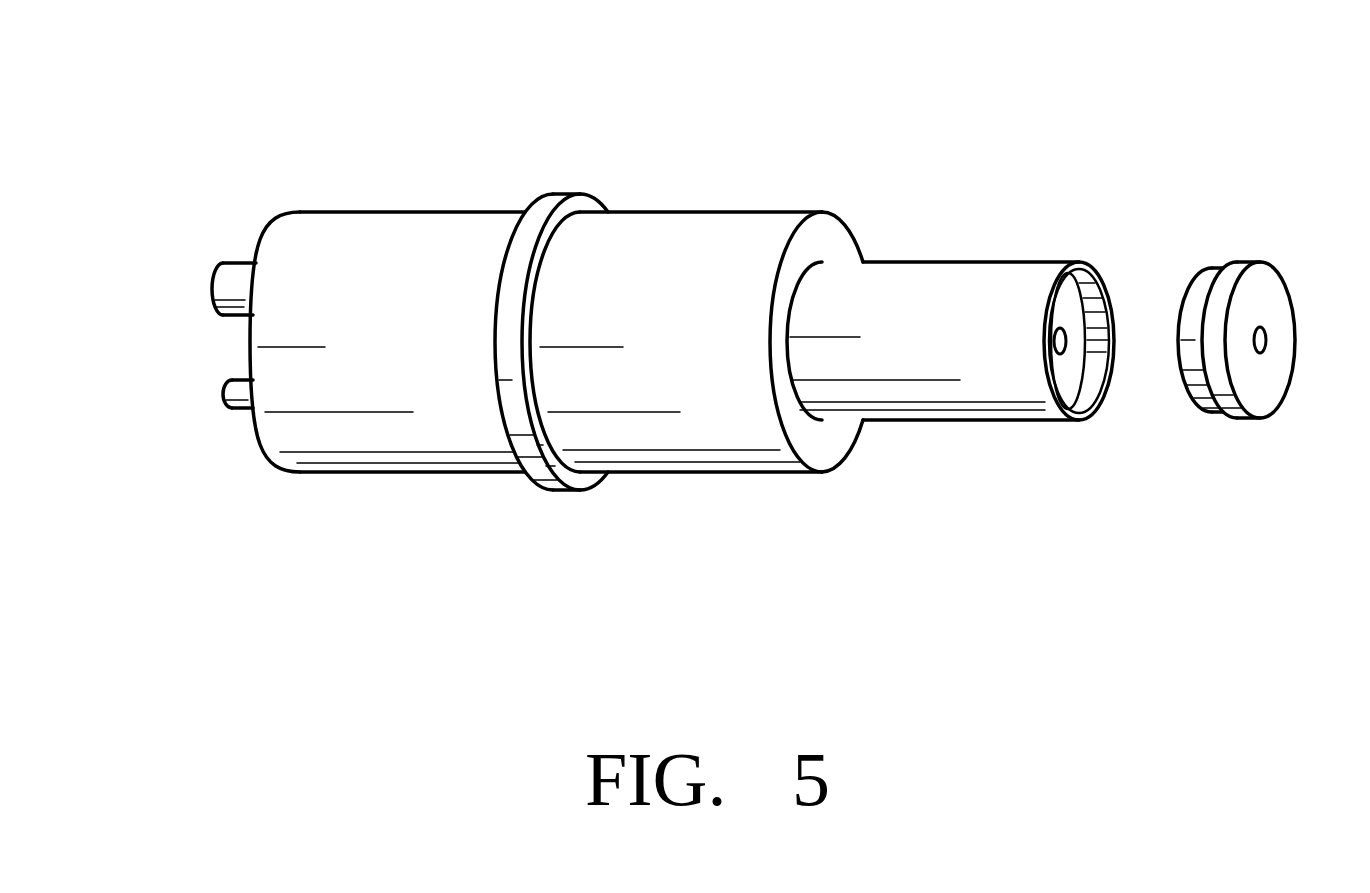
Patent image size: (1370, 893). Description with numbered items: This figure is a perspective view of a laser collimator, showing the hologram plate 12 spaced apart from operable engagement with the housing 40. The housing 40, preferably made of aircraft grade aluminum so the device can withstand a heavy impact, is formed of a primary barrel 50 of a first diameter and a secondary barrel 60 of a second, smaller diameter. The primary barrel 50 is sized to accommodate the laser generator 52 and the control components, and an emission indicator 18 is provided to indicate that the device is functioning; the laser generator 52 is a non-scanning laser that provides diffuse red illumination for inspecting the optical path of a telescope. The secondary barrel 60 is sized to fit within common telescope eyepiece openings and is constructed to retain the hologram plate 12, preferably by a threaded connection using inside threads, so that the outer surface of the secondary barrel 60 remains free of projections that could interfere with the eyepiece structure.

The hologram plate 12 is at (1258, 262).
The emission indicator 18 is at (193, 428).
The housing 40 is at (620, 330).
The primary barrel 50 is at (303, 523).
The laser generator 52 is at (228, 288).
The secondary barrel 60 is at (820, 443).